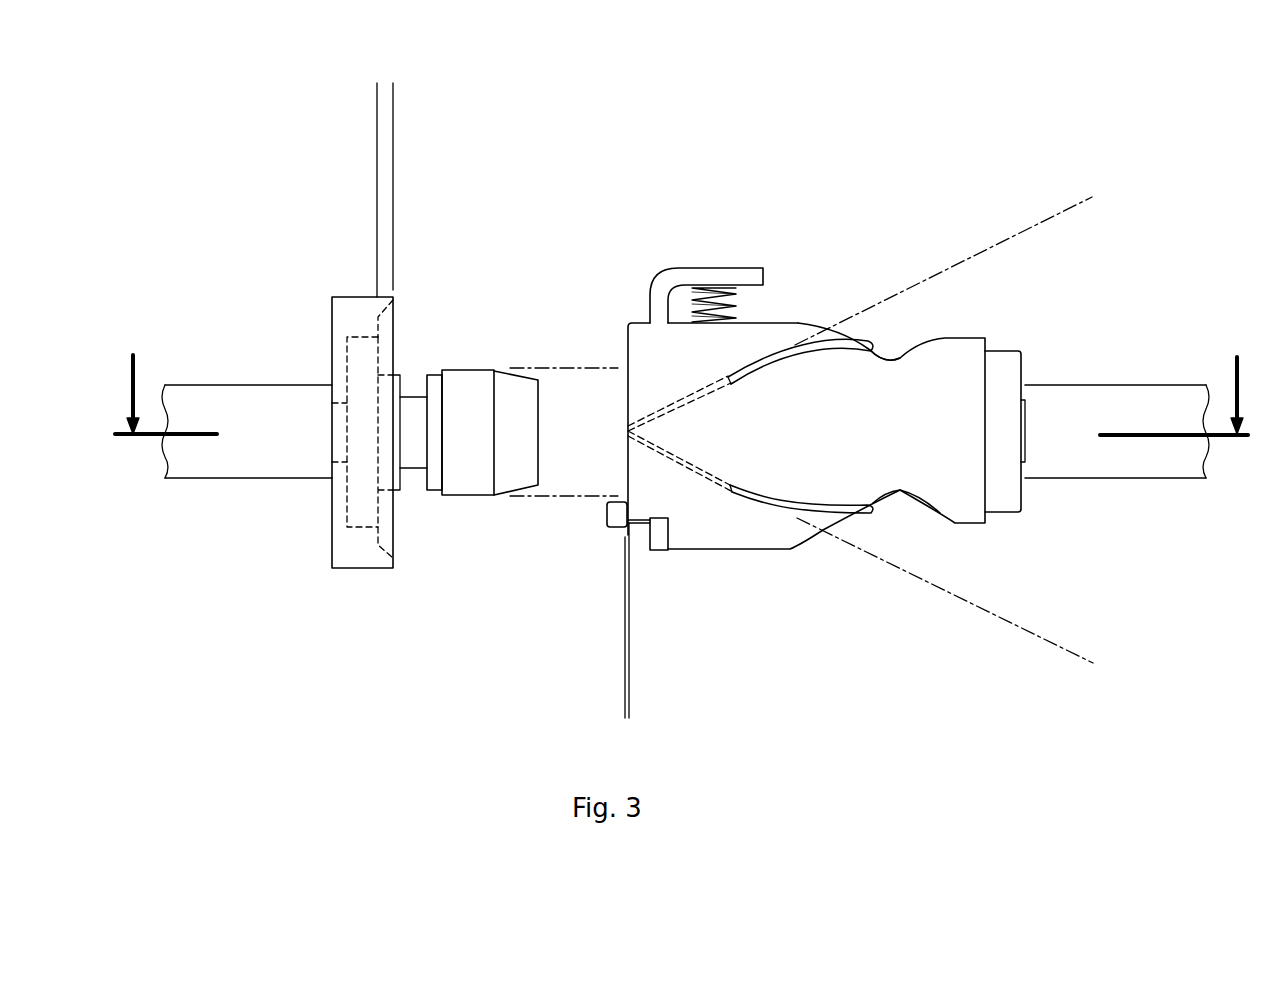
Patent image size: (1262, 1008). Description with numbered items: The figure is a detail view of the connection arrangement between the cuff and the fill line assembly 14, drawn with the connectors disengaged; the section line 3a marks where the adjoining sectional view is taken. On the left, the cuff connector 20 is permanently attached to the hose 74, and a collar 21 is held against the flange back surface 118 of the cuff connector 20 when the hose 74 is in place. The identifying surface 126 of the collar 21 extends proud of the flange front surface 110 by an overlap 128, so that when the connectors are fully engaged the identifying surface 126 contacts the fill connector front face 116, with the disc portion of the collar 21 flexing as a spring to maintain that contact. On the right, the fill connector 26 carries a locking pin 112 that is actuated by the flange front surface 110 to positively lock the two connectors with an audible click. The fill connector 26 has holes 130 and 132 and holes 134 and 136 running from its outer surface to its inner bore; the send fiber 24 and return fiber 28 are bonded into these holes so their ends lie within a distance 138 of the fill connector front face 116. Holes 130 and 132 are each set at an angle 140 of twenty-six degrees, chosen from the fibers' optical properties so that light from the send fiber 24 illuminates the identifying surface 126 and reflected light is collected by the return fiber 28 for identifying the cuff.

The section line 3a is at (682, 373).
The fill line assembly 14 is at (1197, 147).
The cuff connector 20 is at (466, 370).
The collar 21 is at (355, 297).
The send fiber 24 is at (793, 345).
The fill connector 26 is at (731, 233).
The return fiber 28 is at (760, 508).
The hose 74 is at (192, 387).
The flange front surface 110 is at (388, 512).
The locking pin 112 is at (612, 527).
The fill connector front face 116 is at (618, 350).
The flange back surface 118 is at (340, 508).
The identifying surface 126 is at (400, 318).
The overlap 128 is at (402, 88).
The hole 130 is at (729, 376).
The hole 132 is at (727, 488).
The hole 134 is at (900, 358).
The hole 136 is at (905, 493).
The distance 138 is at (639, 710).
The angle 140 is at (1066, 218).